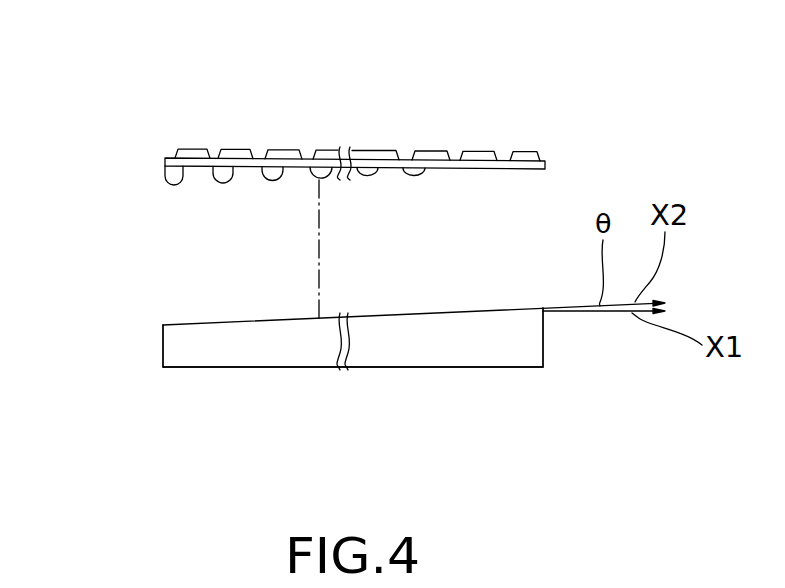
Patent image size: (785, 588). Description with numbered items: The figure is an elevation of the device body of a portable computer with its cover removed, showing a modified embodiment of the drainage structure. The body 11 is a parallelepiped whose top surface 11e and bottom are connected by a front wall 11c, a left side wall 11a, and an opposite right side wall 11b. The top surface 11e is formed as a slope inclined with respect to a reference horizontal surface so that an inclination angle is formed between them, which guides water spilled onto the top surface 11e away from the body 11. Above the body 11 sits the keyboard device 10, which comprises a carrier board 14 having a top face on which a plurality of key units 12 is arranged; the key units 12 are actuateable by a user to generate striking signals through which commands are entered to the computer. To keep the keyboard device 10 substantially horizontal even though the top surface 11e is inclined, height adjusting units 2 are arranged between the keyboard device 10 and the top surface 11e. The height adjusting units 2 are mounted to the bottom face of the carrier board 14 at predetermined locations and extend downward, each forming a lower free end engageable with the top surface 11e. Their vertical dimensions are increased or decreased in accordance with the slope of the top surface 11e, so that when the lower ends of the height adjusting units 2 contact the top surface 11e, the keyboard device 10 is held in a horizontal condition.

The keyboard device 10 is at (140, 109).
The key units 12 is at (193, 149).
The carrier board 14 is at (167, 161).
The height adjusting units 2 is at (166, 176).
The body 11 is at (178, 341).
The left side wall 11a is at (163, 352).
The right side wall 11b is at (545, 352).
The front wall 11c is at (297, 350).
The top surface 11e is at (193, 325).